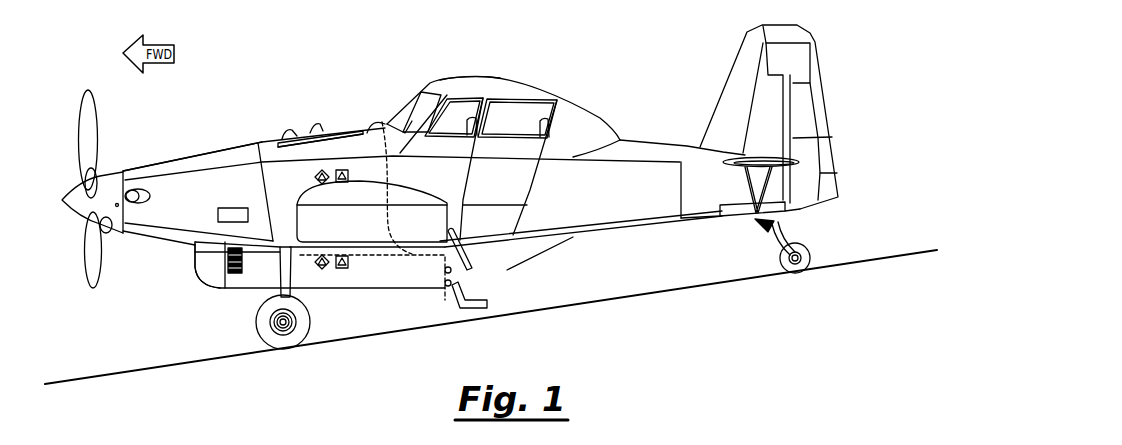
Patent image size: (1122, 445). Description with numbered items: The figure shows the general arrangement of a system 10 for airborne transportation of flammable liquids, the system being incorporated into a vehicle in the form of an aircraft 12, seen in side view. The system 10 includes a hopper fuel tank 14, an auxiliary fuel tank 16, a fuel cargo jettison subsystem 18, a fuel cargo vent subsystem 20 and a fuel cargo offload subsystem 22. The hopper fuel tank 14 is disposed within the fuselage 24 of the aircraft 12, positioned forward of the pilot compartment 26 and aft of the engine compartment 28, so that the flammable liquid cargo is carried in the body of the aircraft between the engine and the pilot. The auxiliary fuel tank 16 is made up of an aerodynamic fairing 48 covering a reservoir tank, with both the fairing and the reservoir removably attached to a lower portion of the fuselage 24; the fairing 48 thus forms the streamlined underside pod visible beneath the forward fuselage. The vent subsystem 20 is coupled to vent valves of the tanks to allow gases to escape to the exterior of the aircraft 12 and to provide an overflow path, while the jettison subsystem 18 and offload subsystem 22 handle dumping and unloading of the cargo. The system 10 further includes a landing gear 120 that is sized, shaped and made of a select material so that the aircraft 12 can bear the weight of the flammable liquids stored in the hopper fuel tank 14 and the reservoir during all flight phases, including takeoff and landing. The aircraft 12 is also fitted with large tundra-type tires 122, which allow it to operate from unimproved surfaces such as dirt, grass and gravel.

The system 10 is at (377, 58).
The aircraft 12 is at (535, 80).
The hopper fuel tank 14 is at (335, 126).
The auxiliary fuel tank 16 is at (240, 294).
The fuel cargo jettison subsystem 18 is at (485, 298).
The fuel cargo vent subsystem 20 is at (445, 300).
The fuel cargo offload subsystem 22 is at (466, 272).
The fuselage 24 is at (648, 145).
The pilot compartment 26 is at (478, 78).
The engine compartment 28 is at (199, 151).
The aerodynamic fairing 48 is at (205, 284).
The landing gear 120 is at (283, 278).
The tundra-type tires 122 is at (262, 328).